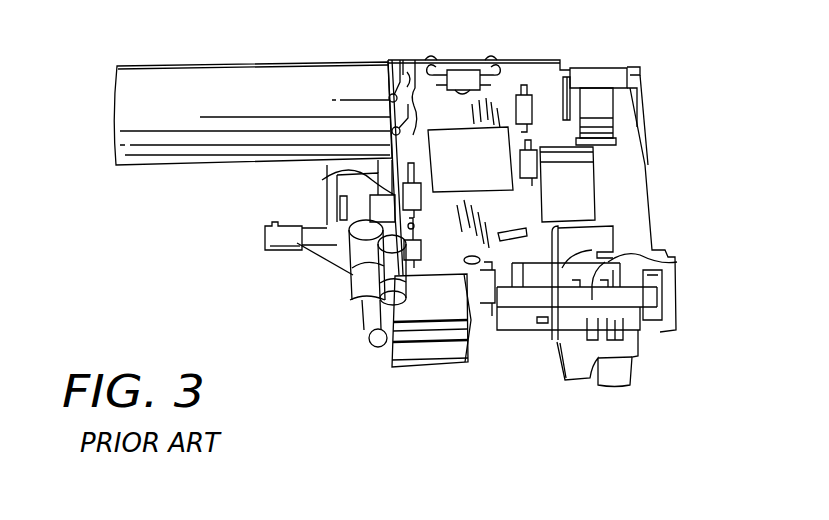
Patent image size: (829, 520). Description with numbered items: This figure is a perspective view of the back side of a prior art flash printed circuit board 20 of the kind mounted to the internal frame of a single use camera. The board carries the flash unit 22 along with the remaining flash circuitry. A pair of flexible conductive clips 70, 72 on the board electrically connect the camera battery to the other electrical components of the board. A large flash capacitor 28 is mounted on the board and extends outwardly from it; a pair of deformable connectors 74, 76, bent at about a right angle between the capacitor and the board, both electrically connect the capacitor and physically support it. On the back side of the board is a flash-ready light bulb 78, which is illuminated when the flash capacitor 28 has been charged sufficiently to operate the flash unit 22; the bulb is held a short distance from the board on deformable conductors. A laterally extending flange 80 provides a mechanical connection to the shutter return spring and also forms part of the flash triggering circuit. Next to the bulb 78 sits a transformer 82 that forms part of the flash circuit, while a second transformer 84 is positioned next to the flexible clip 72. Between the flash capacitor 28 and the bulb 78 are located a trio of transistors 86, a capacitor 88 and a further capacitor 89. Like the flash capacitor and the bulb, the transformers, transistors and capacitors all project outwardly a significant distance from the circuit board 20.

The flash printed circuit board 20 is at (650, 170).
The flash unit 22 is at (677, 262).
The flash capacitor 28 is at (122, 112).
The flexible conductive clip 70 is at (605, 370).
The flexible conductive clip 72 is at (598, 112).
The deformable connector 74 is at (400, 62).
The deformable connector 76 is at (417, 66).
The flash-ready light bulb 78 is at (370, 340).
The laterally extending flange 80 is at (327, 238).
The transformer 82 is at (418, 352).
The transformer 84 is at (573, 200).
The transistors 86 is at (403, 293).
The capacitor 88 is at (322, 208).
The capacitor 89 is at (338, 175).